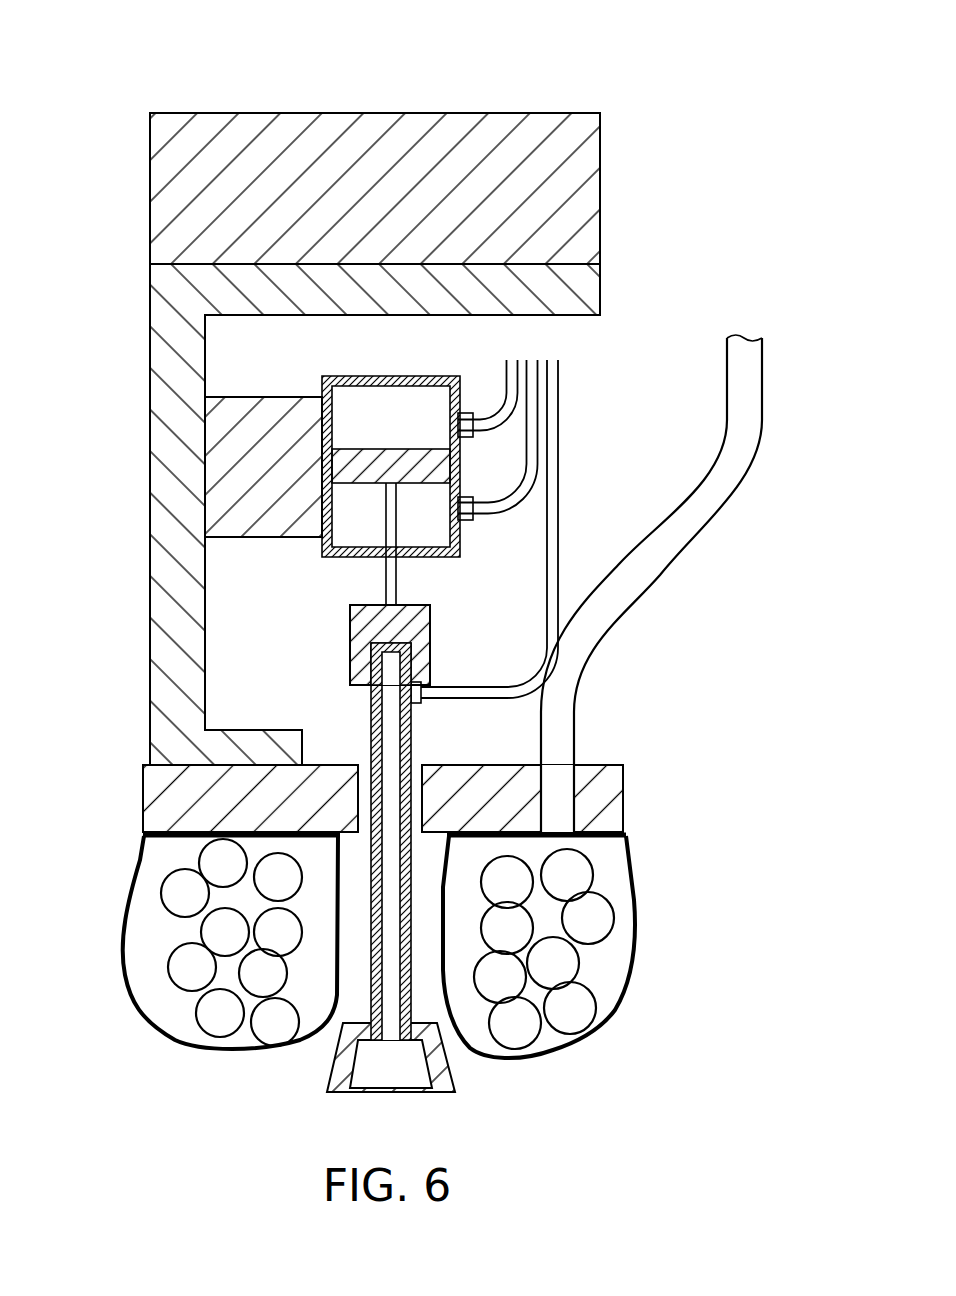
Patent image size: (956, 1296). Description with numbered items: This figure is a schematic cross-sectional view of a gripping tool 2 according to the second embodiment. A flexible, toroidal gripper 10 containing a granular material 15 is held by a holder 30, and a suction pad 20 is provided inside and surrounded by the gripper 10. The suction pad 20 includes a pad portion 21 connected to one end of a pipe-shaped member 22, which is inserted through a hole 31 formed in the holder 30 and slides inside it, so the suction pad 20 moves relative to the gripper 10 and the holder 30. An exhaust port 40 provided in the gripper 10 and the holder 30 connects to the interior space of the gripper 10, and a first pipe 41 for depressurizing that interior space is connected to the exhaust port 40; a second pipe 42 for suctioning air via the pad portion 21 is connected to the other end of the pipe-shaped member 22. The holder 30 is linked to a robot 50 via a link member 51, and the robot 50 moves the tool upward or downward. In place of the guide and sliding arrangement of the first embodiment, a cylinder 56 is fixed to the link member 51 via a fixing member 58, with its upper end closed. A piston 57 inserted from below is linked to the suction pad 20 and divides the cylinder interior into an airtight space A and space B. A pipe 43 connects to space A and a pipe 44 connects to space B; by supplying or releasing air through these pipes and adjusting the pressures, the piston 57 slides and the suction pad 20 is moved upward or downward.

The gripping tool 2 is at (752, 92).
The gripper 10 is at (157, 1027).
The granular material 15 is at (178, 970).
The suction pad 20 is at (232, 1077).
The pad portion 21 is at (341, 1088).
The pipe-shaped member 22 is at (372, 998).
The holder 30 is at (157, 805).
The hole 31 is at (357, 793).
The exhaust port 40 is at (557, 806).
The first pipe 41 is at (742, 340).
The second pipe 42 is at (556, 379).
The pipe 43 is at (508, 364).
The pipe 44 is at (530, 357).
The robot 50 is at (163, 180).
The link member 51 is at (163, 348).
The cylinder 56 is at (327, 375).
The piston 57 is at (428, 472).
The fixing member 58 is at (272, 408).
The space A is at (390, 402).
The space B is at (352, 540).